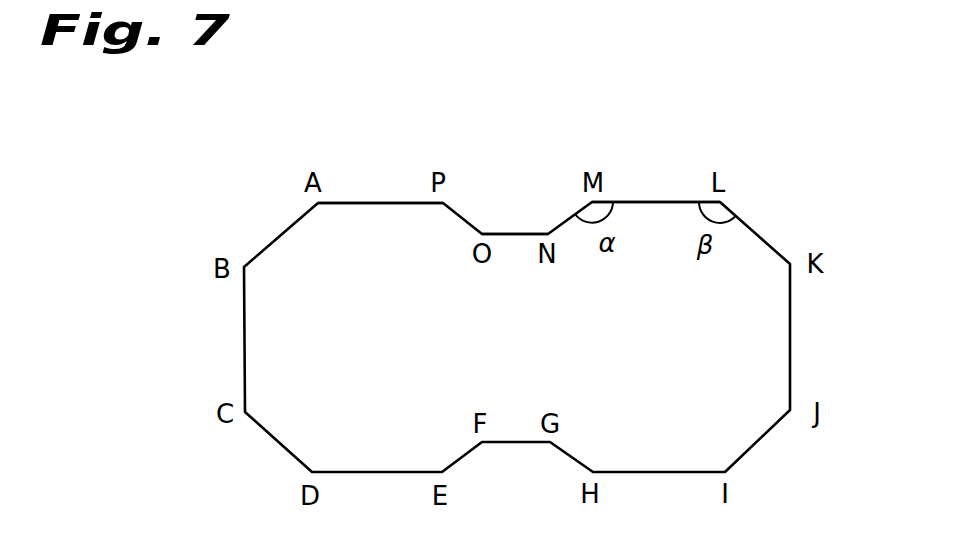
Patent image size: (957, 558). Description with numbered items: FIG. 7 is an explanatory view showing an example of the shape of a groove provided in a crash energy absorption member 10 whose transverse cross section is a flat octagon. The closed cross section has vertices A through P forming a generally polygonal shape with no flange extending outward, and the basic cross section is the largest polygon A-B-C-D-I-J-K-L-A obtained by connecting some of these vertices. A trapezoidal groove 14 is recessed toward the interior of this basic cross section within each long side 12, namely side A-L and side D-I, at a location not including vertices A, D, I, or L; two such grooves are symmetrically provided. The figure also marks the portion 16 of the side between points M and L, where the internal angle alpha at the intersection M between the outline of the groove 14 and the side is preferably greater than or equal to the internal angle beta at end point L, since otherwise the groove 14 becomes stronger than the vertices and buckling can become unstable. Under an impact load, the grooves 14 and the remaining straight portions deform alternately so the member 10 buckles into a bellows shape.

The crash energy absorption member 10 is at (775, 208).
The long side 12 is at (378, 207).
The groove 14 is at (512, 235).
The raised edge portion M-L 16 is at (648, 200).